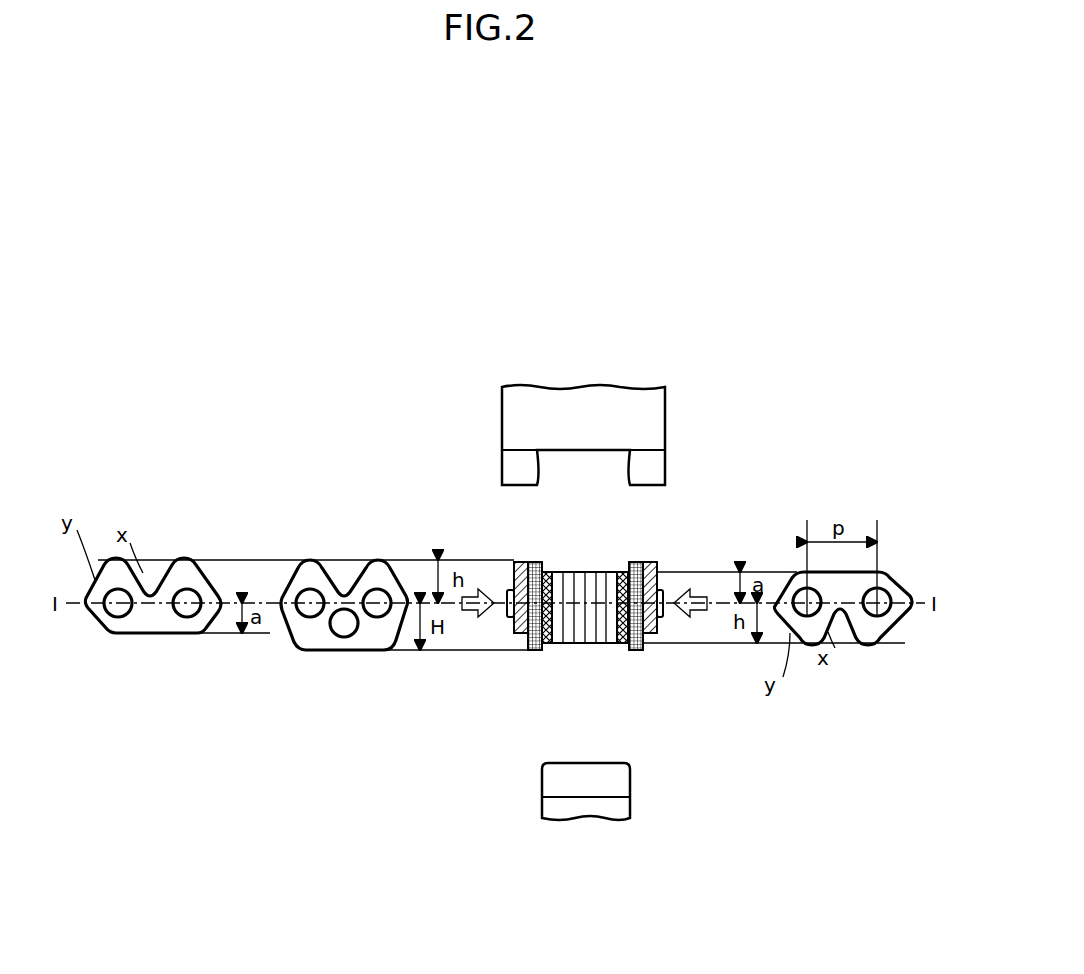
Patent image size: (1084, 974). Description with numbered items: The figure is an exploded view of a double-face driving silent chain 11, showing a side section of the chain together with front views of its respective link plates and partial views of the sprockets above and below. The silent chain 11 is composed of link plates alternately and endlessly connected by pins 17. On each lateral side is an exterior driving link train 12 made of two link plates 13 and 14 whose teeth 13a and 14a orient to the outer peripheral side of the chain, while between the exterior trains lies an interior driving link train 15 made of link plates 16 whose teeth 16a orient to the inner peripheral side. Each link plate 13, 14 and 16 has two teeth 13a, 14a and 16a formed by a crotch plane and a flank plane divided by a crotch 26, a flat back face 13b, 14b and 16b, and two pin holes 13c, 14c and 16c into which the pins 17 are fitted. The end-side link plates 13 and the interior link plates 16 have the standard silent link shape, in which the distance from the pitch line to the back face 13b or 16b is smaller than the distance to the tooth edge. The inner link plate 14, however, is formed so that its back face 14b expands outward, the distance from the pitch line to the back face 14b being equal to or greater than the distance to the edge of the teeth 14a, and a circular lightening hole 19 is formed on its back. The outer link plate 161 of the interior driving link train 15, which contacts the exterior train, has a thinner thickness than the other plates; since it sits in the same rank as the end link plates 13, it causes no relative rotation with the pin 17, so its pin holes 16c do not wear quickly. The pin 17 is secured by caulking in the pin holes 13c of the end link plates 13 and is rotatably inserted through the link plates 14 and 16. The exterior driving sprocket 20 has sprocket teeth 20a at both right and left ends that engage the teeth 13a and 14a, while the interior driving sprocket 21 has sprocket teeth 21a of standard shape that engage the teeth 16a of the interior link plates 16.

The silent chain 11 is at (722, 540).
The exterior driving link train 12 is at (518, 660).
The end-side link plate 13 is at (158, 622).
The teeth of link plate 13 13a is at (117, 568).
The back face of link plate 13 13b is at (183, 635).
The pin hole of link plate 13 13c is at (127, 613).
The inner link plate 14 is at (325, 638).
The teeth of link plate 14 14a is at (308, 565).
The back face of link plate 14 14b is at (308, 652).
The pin hole of link plate 14 14c is at (308, 597).
The interior driving link train 15 is at (579, 558).
The link plate of interior driving link train 16 is at (587, 643).
The outer link plate 161 is at (547, 647).
The teeth of link plate 16 16a is at (807, 645).
The back face of link plate 16 16b is at (853, 568).
The pin hole of link plate 16 16c is at (880, 607).
The pin 17 is at (658, 617).
The lightening hole 19 is at (348, 625).
The exterior driving sprocket 20 is at (653, 413).
The sprocket teeth of exterior driving sprocket 20a is at (510, 468).
The interior driving sprocket 21 is at (617, 808).
The sprocket teeth of interior driving sprocket 21a is at (620, 778).
The crotch 26 is at (165, 577).